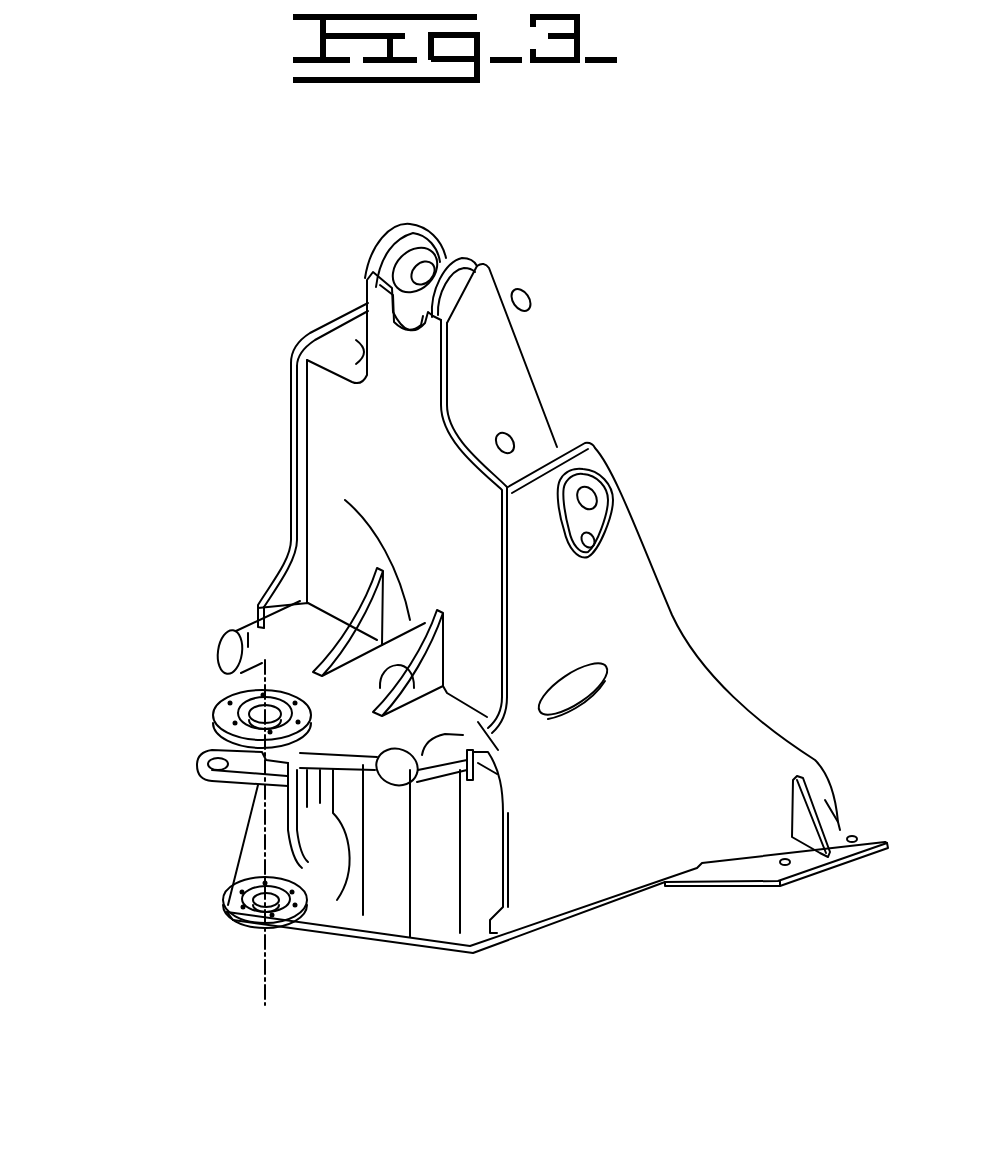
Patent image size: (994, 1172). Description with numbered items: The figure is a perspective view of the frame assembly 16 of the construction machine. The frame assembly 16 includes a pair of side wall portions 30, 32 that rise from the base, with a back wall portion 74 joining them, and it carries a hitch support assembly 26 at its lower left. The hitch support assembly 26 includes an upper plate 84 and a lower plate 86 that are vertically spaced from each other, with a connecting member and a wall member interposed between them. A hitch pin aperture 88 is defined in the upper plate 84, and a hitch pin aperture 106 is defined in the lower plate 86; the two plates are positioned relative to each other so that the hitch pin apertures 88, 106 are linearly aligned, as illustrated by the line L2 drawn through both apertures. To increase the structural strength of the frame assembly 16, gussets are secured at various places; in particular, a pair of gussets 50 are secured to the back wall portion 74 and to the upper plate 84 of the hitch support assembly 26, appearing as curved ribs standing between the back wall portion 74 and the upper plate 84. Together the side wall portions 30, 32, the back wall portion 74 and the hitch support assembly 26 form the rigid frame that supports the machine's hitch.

The frame assembly 16 is at (565, 263).
The side wall portion 30 is at (333, 338).
The side wall portion 32 is at (607, 620).
The back wall portion 74 is at (443, 472).
The gussets 50 is at (437, 668).
The upper plate 84 is at (248, 645).
The hitch pin aperture 88 is at (217, 707).
The hitch pin aperture 106 is at (240, 900).
The lower plate 86 is at (328, 907).
The hitch support assembly 26 is at (197, 717).
The line L2 is at (225, 705).